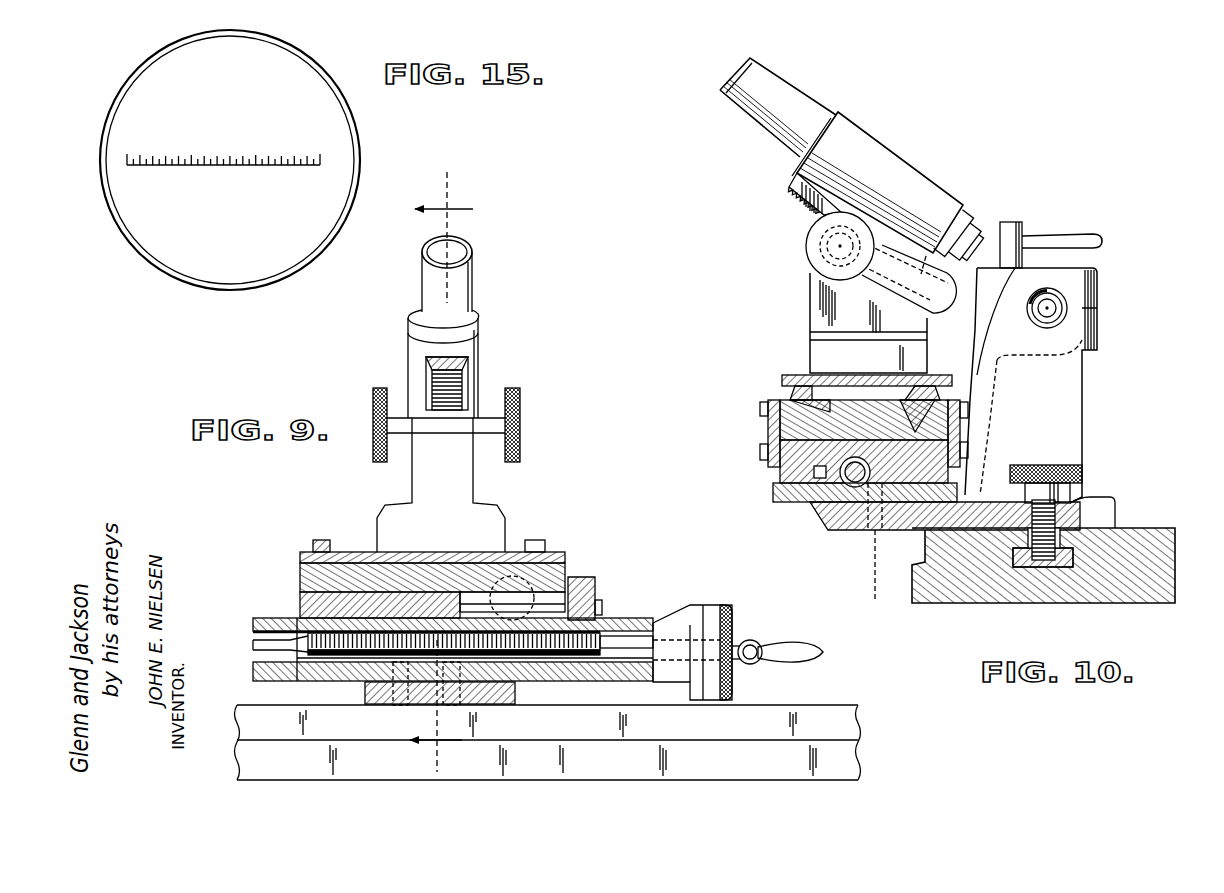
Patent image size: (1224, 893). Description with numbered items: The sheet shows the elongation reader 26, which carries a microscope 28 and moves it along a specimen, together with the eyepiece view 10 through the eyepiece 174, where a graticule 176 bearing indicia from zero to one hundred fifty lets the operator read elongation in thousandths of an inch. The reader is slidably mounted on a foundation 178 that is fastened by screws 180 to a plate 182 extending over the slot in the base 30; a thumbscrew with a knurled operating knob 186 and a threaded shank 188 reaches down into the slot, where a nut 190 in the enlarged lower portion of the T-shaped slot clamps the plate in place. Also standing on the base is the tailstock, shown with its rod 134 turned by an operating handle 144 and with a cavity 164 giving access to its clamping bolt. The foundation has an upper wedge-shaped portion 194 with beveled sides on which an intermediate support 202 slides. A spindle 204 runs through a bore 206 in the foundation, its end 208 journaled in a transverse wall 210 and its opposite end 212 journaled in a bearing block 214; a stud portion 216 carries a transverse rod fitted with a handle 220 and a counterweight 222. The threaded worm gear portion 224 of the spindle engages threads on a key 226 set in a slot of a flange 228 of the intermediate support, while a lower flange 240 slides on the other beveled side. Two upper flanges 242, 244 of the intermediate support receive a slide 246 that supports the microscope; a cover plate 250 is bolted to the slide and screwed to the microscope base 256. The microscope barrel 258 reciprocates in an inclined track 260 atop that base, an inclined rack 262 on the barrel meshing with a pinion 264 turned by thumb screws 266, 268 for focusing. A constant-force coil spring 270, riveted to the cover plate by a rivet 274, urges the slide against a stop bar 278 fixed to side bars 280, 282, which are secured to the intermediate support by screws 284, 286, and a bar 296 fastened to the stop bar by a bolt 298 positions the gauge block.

In FIG. 9, the direction of movement 10 is at (441, 472).
In FIG. 10, the elongation reader 26 is at (732, 165).
In FIG. 9, the microscope 28 is at (472, 284).
In FIG. 10, the microscope 28 is at (805, 104).
In FIG. 9, the base 30 is at (845, 735).
In FIG. 10, the base 30 is at (1150, 580).
In FIG. 10, the rod 134 is at (1010, 232).
In FIG. 10, the operating handle 144 is at (1075, 236).
In FIG. 10, the cavity 164 is at (1055, 432).
In FIG. 15, the eyepiece 174 is at (357, 152).
In FIG. 15, the graticule 176 is at (231, 137).
In FIG. 9, the foundation 178 is at (638, 618).
In FIG. 10, the foundation 178 is at (786, 506).
In FIG. 9, the screws 180 is at (390, 691).
In FIG. 10, the screws 180 is at (884, 541).
In FIG. 9, the plate 182 is at (495, 700).
In FIG. 10, the plate 182 is at (838, 530).
In FIG. 10, the knurled operating knob 186 is at (1083, 474).
In FIG. 10, the threaded shank 188 is at (1075, 518).
In FIG. 10, the nut 190 is at (1060, 548).
In FIG. 10, the upper wedge-shaped portion 194 is at (874, 468).
In FIG. 9, the intermediate support 202 is at (305, 598).
In FIG. 10, the intermediate support 202 is at (790, 428).
In FIG. 9, the spindle 204 is at (618, 662).
In FIG. 9, the bore 206 is at (598, 680).
In FIG. 9, the end of spindle 208 is at (252, 648).
In FIG. 9, the transverse wall 210 is at (295, 680).
In FIG. 9, the opposite end of spindle 212 is at (708, 645).
In FIG. 9, the bearing block 214 is at (693, 618).
In FIG. 9, the stud portion 216 is at (728, 650).
In FIG. 9, the handle 220 is at (812, 648).
In FIG. 9, the counterweight 222 is at (750, 664).
In FIG. 9, the threaded worm gear portion 224 is at (598, 636).
In FIG. 9, the key 226 is at (312, 604).
In FIG. 10, the flange 228 is at (785, 476).
In FIG. 10, the lower flange 240 is at (955, 438).
In FIG. 10, the upper flange 242 is at (920, 398).
In FIG. 10, the upper flange 244 is at (795, 392).
In FIG. 9, the slide 246 is at (548, 575).
In FIG. 9, the cover plate 250 is at (479, 382).
In FIG. 9, the microscope base 256 is at (470, 494).
In FIG. 10, the microscope base 256 is at (810, 300).
In FIG. 10, the microscope barrel 258 is at (905, 165).
In FIG. 10, the inclined track 260 is at (948, 288).
In FIG. 10, the inclined rack 262 is at (790, 189).
In FIG. 10, the pinion 264 is at (822, 256).
In FIG. 9, the thumb screw 266 is at (372, 452).
In FIG. 9, the thumb screw 268 is at (513, 427).
In FIG. 10, the thumb screw 268 is at (805, 240).
In FIG. 9, the coil spring 270 is at (350, 558).
In FIG. 9, the rivet 274 is at (330, 566).
In FIG. 9, the stop bar 278 is at (578, 580).
In FIG. 10, the side bar 280 is at (944, 392).
In FIG. 10, the side bar 282 is at (770, 402).
In FIG. 10, the screws 284 is at (968, 412).
In FIG. 10, the screws 286 is at (762, 452).
In FIG. 9, the bar 296 is at (548, 572).
In FIG. 9, the bolt 298 is at (598, 600).